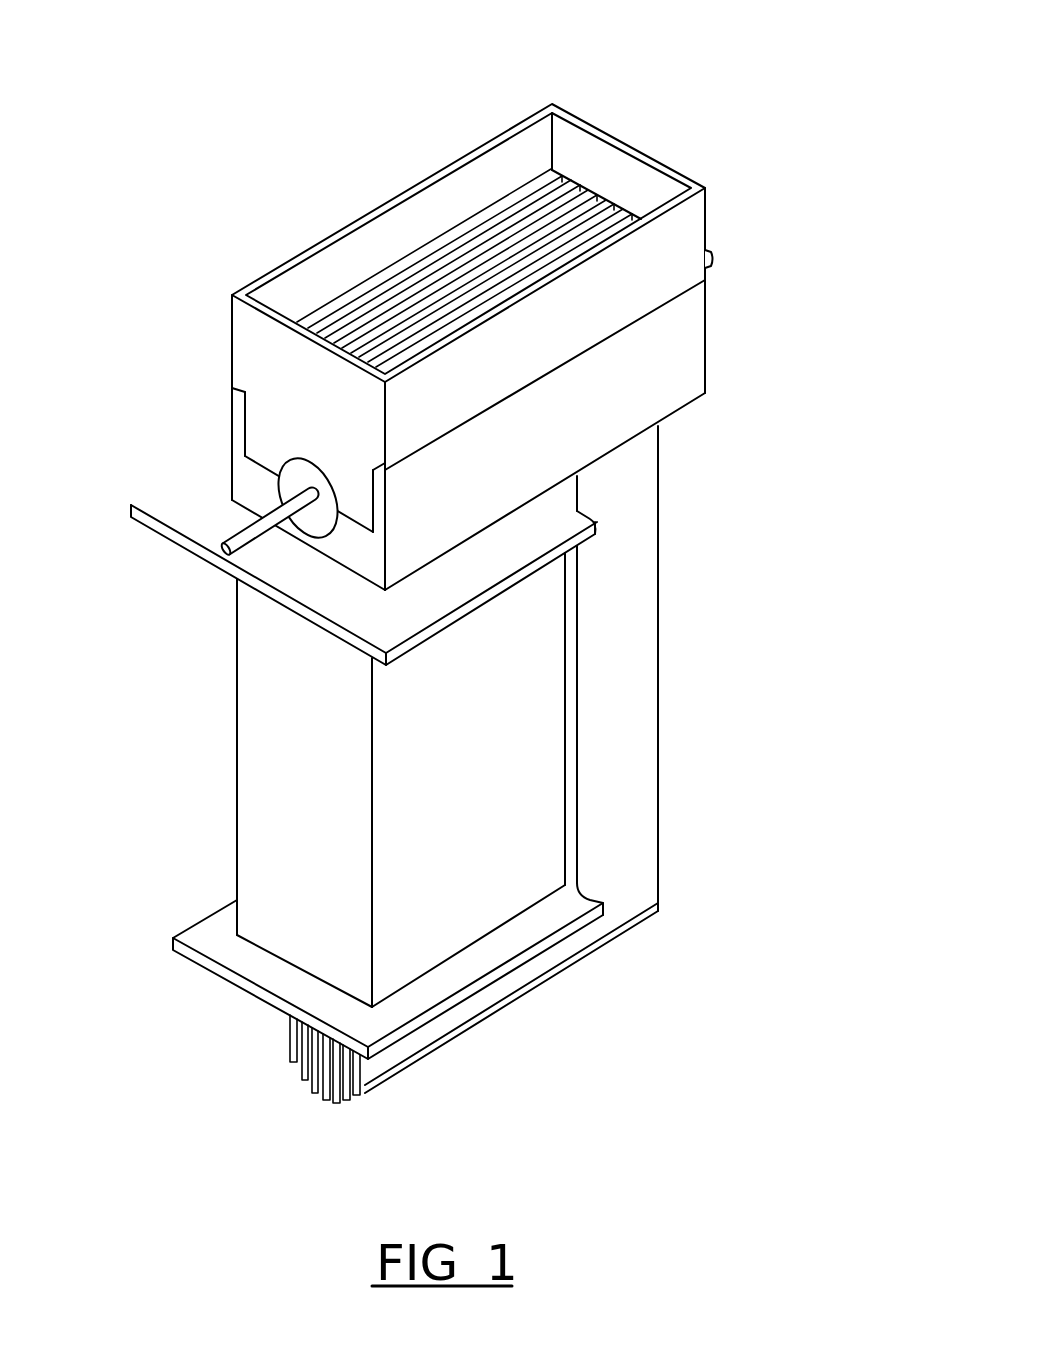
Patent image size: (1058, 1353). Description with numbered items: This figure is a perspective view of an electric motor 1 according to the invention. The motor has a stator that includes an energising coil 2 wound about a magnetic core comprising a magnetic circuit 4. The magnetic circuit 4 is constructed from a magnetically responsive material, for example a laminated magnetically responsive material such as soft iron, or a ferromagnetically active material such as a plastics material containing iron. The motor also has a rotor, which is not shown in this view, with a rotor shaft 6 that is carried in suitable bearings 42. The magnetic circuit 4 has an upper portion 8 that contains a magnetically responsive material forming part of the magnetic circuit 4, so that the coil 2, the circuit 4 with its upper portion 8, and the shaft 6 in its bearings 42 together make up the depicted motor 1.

The electric motor 1 is at (797, 800).
The energising coil 2 is at (247, 760).
The magnetic circuit 4 is at (617, 137).
The rotor shaft 6 is at (712, 255).
The upper portion 8 is at (245, 352).
The bearings 42 is at (248, 440).